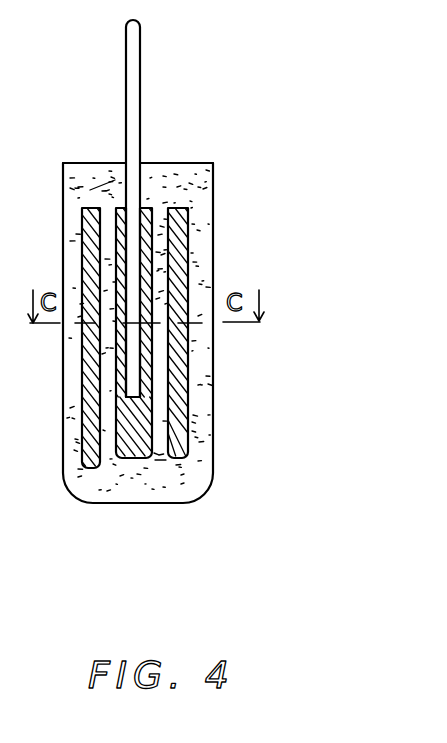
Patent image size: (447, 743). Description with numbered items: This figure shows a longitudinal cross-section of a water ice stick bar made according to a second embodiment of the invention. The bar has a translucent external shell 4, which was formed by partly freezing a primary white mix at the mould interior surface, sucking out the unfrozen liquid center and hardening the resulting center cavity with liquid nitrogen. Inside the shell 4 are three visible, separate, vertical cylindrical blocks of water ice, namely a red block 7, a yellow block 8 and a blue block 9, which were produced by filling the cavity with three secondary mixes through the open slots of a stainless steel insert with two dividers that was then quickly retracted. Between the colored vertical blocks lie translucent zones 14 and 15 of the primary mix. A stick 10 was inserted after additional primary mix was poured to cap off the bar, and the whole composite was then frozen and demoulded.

The shell 4 is at (200, 222).
The secondary mix 7 is at (93, 425).
The secondary mix 8 is at (140, 440).
The secondary mix 9 is at (178, 430).
The stick 10 is at (132, 88).
The translucent zone 14 is at (108, 223).
The translucent zone 15 is at (163, 437).